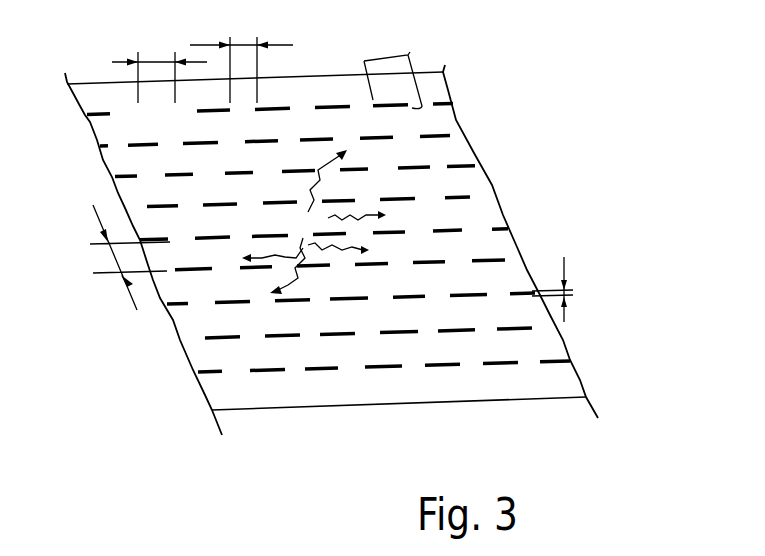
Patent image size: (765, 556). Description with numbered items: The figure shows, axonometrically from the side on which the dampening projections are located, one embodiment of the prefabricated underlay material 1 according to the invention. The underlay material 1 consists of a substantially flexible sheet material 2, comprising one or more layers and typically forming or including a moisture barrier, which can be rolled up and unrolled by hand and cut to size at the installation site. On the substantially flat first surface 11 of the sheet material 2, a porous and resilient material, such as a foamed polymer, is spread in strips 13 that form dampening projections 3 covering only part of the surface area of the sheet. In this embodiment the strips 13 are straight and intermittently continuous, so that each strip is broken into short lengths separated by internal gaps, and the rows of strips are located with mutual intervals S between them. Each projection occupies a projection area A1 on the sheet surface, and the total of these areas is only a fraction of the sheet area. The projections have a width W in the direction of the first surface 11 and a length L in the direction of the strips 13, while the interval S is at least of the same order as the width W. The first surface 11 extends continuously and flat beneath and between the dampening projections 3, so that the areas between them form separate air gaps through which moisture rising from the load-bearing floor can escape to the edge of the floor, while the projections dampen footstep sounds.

The underlay material 1 is at (193, 386).
The sheet material 2 is at (442, 148).
The dampening projections 3 is at (253, 142).
The first surface 11 is at (512, 389).
The strips 13 is at (450, 160).
The projection area A1 is at (406, 67).
The length of the dampening projections L is at (159, 64).
The interval S is at (130, 262).
The width of dampening projections W is at (567, 291).